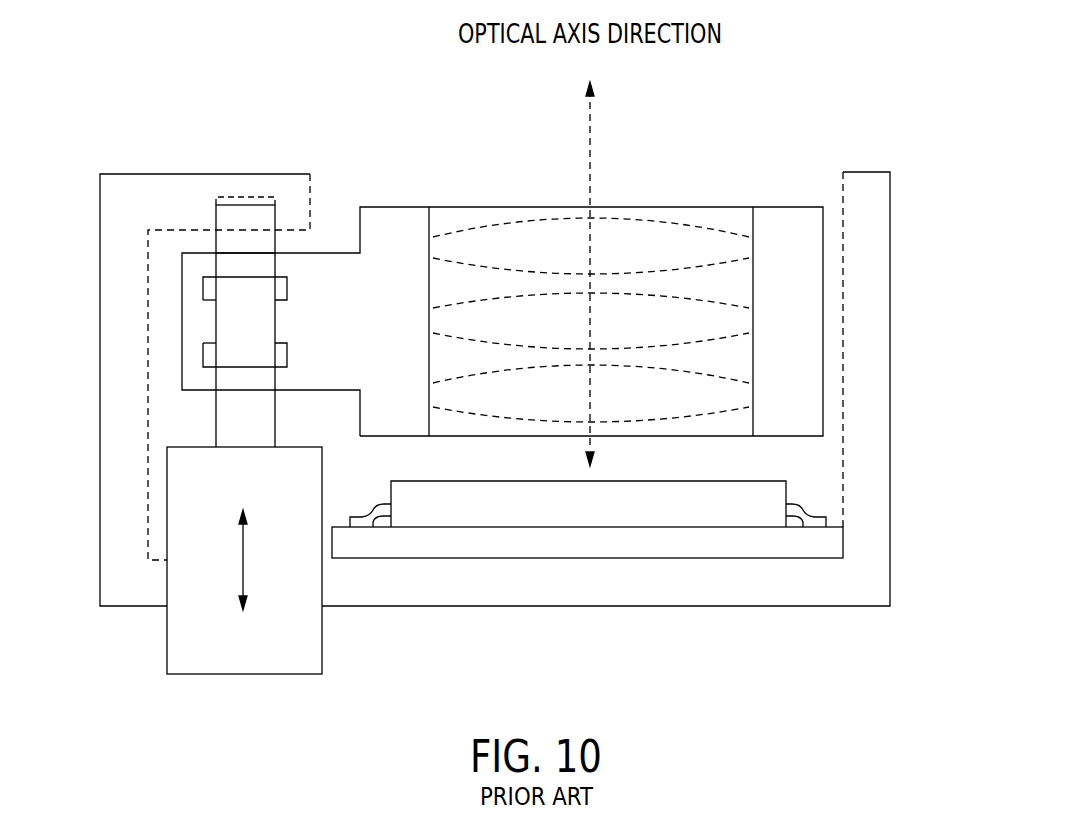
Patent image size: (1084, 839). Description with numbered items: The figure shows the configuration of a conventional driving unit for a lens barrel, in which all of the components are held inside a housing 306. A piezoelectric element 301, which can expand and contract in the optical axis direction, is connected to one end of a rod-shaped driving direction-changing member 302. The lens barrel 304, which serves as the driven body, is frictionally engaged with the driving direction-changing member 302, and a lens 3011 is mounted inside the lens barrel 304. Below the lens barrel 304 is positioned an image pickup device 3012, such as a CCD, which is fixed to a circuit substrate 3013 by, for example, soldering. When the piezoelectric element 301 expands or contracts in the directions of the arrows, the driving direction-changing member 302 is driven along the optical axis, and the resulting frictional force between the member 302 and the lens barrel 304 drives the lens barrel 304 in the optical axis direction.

The piezoelectric element 301 is at (243, 675).
The rod-shaped driving direction-changing member 302 is at (243, 213).
The lens barrel 304 is at (398, 216).
The housing 306 is at (512, 598).
The lens 3011 is at (670, 236).
The image pickup device 3012 is at (623, 522).
The circuit substrate 3013 is at (745, 552).